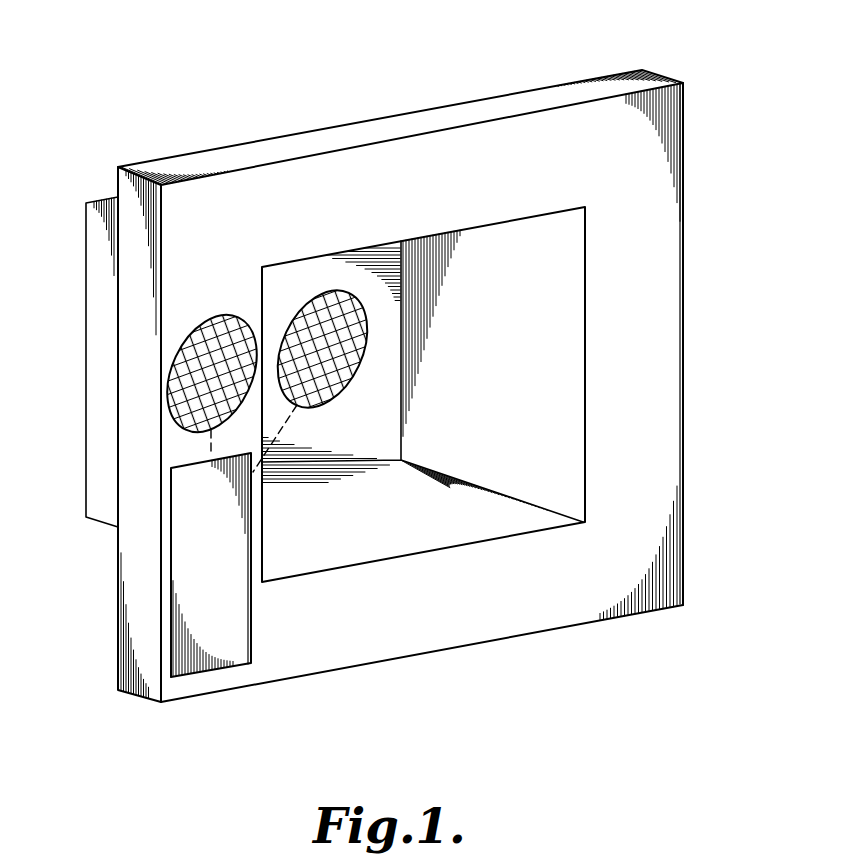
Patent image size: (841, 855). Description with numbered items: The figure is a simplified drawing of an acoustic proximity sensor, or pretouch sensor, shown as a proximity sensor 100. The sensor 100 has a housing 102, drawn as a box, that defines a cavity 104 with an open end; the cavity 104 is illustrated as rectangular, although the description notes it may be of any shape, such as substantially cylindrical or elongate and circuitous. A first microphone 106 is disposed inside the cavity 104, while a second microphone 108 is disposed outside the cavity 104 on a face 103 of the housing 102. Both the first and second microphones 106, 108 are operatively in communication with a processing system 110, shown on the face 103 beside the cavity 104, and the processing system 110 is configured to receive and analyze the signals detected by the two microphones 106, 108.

The proximity sensor 100 is at (140, 100).
The housing 102 is at (686, 510).
The face 103 is at (537, 605).
The cavity 104 is at (552, 355).
The first microphone 106 is at (345, 301).
The second microphone 108 is at (172, 387).
The processing system 110 is at (233, 657).